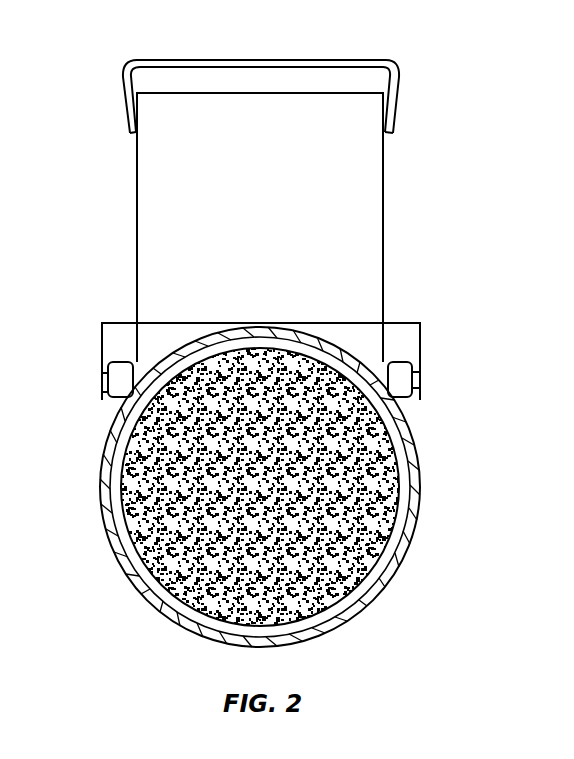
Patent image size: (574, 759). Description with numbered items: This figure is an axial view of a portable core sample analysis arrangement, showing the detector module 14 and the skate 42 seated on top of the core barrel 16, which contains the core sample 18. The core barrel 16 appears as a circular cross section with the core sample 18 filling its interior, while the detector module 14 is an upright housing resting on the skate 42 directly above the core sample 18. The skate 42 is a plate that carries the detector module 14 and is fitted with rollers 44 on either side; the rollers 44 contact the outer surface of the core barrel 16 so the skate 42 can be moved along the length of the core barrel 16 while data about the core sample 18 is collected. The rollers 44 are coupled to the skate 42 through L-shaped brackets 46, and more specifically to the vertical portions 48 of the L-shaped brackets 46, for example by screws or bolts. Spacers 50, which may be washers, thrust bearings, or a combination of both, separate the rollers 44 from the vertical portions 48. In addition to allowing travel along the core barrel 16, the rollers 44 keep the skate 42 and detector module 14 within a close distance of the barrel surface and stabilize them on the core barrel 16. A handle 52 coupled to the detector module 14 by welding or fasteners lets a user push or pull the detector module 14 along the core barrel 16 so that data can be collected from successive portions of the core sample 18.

The detector module 14 is at (407, 40).
The core barrel 16 is at (103, 487).
The core sample 18 is at (398, 463).
The skate 42 is at (262, 323).
The rollers 44 is at (396, 361).
The L-shaped brackets 46 is at (404, 323).
The vertical portions 48 is at (102, 356).
The spacers 50 is at (106, 400).
The handle 52 is at (262, 60).